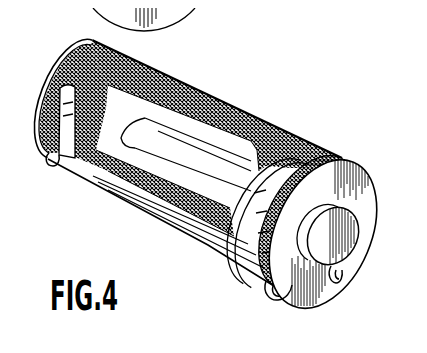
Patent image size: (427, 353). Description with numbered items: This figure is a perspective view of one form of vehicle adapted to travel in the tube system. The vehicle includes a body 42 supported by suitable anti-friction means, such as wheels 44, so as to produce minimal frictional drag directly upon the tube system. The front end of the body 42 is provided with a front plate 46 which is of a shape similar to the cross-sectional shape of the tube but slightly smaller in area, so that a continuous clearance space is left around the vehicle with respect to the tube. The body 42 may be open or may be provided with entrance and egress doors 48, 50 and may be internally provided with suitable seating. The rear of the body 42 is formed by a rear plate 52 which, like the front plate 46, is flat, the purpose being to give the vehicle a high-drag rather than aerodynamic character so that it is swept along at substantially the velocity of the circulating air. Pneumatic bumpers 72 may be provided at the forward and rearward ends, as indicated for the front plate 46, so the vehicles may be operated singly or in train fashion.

The body 42 is at (254, 113).
The wheels 44 is at (44, 153).
The front plate 46 is at (357, 175).
The entrance door 48 is at (299, 140).
The egress door 50 is at (116, 51).
The rear plate 52 is at (68, 36).
The pneumatic bumpers 72 is at (343, 223).